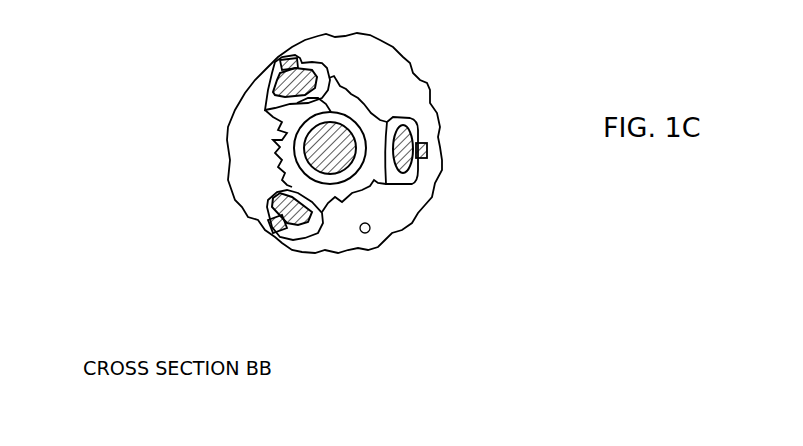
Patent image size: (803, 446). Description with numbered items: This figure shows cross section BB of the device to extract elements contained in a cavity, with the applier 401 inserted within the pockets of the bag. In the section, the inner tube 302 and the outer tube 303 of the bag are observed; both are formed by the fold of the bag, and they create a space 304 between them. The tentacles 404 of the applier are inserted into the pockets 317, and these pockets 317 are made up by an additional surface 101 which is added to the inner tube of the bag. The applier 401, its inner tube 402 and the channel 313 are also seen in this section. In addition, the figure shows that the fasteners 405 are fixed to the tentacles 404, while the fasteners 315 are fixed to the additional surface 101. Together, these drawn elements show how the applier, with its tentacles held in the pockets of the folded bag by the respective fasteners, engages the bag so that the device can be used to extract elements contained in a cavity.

The additional surface 101 is at (400, 117).
The inner tube 302 is at (350, 89).
The outer tube 303 is at (415, 83).
The space 304 is at (228, 143).
The channel 313 is at (368, 233).
The fasteners 315 is at (428, 160).
The pockets 317 is at (265, 106).
The applier 401 is at (312, 192).
The inner tube 402 is at (308, 144).
The tentacles 404 is at (265, 84).
The fasteners 405 is at (420, 143).